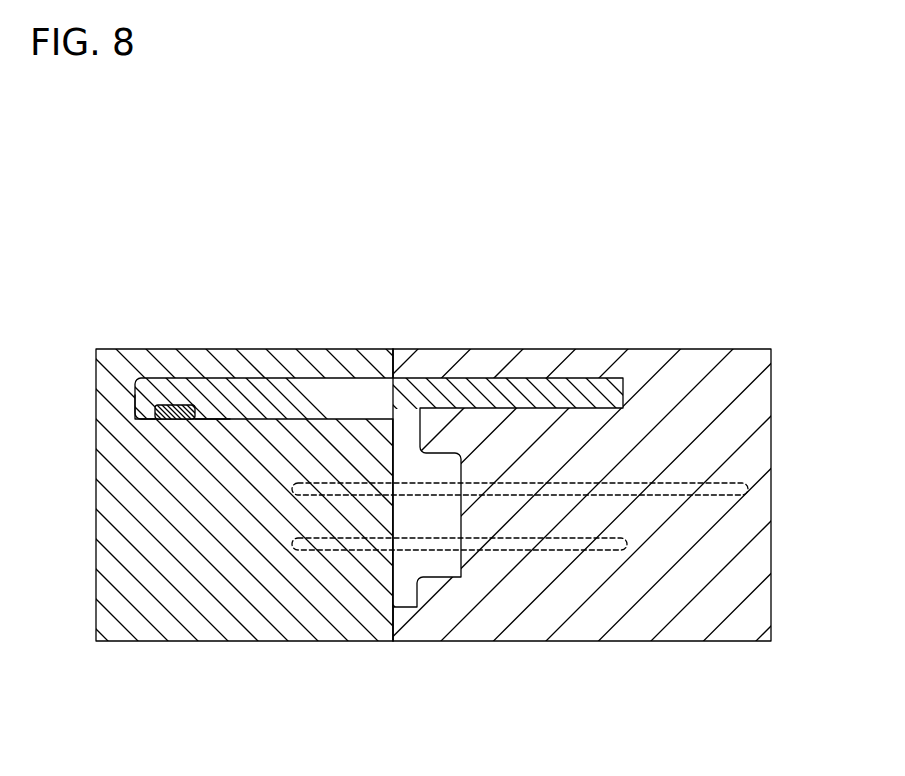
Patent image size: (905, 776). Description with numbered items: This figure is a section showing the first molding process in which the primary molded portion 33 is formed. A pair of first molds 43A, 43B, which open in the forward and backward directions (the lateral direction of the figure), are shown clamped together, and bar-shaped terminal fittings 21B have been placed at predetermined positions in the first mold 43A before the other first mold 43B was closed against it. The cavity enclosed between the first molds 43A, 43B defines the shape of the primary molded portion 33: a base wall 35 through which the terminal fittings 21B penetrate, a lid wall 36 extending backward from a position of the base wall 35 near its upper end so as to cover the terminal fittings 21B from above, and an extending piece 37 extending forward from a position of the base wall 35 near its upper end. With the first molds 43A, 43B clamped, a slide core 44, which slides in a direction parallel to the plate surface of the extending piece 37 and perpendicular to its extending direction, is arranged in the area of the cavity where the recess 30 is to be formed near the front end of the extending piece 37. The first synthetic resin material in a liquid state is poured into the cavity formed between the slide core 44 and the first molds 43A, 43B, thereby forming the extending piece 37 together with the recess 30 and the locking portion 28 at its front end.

The terminal fittings 21B is at (630, 547).
The locking portion 28 is at (145, 408).
The recess 30 is at (187, 413).
The primary molded portion 33 is at (332, 400).
The base wall 35 is at (406, 553).
The lid wall 36 is at (512, 392).
The extending piece 37 is at (259, 392).
The first mold 43A is at (690, 372).
The first mold 43B is at (165, 362).
The slide core 44 is at (180, 408).